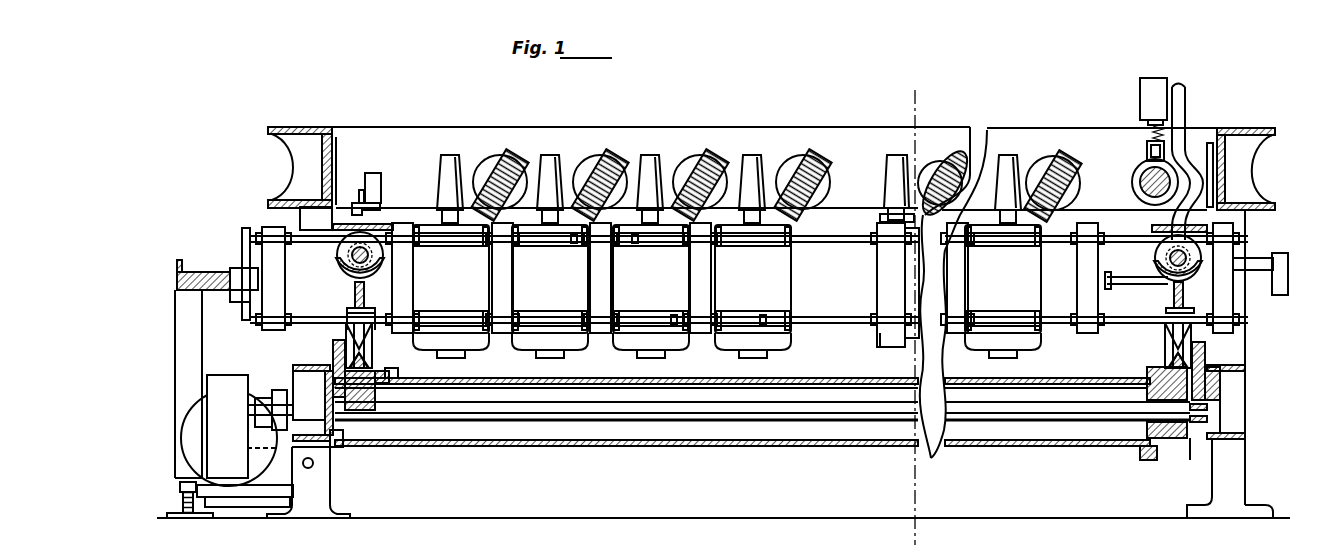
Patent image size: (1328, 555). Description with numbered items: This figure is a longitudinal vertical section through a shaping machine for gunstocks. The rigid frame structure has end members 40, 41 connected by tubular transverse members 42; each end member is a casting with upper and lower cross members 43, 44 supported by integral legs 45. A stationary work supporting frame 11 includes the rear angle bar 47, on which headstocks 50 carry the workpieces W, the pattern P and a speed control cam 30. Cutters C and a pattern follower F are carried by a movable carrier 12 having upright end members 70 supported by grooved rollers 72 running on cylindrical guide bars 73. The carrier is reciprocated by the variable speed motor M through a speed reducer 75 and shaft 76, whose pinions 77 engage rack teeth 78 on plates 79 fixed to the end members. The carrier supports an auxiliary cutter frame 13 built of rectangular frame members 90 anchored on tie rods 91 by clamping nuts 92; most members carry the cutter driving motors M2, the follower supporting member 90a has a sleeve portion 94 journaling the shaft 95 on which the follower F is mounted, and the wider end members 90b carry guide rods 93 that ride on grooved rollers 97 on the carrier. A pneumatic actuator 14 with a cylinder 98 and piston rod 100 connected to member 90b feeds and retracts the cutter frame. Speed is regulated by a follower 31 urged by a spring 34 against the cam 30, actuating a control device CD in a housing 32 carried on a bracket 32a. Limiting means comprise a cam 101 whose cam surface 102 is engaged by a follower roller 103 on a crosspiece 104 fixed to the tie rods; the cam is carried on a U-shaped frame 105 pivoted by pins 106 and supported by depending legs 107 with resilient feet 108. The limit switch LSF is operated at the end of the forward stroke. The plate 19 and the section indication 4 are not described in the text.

The stationary frame 11 is at (868, 127).
The carrier 12 is at (374, 358).
The auxiliary frame 13 is at (926, 332).
The pneumatically operated actuator 14 is at (1250, 260).
The end plate 19 is at (266, 228).
The speed control cam 30 is at (1138, 184).
The follower 31 is at (1147, 153).
The housing 32 is at (1147, 90).
The bracket 32a is at (1186, 112).
The spring 34 is at (1152, 132).
The end member 40 is at (300, 126).
The end member 41 is at (1255, 128).
The tubular transverse member 42 is at (932, 455).
The upper cross member 43 is at (288, 168).
The lower cross member 44 is at (297, 366).
The leg 45 is at (322, 495).
The rear angle bar 47 is at (582, 127).
The headstock 50 is at (490, 152).
The upright end member 70 is at (352, 298).
The grooved roller 72 is at (372, 340).
The cylindrical guide bar 73 is at (398, 370).
The speed reducer 75 is at (226, 385).
The shaft 76 is at (300, 404).
The pinion 77 is at (345, 447).
The rack teeth 78 is at (1208, 414).
The plate 79 is at (333, 356).
The rectangular frame member 90 is at (512, 272).
The follower supporting member 90a is at (890, 340).
The end frame member 90b is at (262, 233).
The tie rod 91 is at (826, 243).
The clamping nut 92 is at (576, 243).
The guide rod 93 is at (1152, 228).
The upright sleeve portion 94 is at (877, 283).
The shaft 95 is at (880, 216).
The grooved roller 97 is at (337, 258).
The cylinder 98 is at (1278, 267).
The piston rod 100 is at (1136, 283).
The cam 101 is at (200, 272).
The cam surface 102 is at (232, 296).
The follower roller 103 is at (236, 268).
The crosspiece 104 is at (246, 318).
The U-shaped frame 105 is at (178, 262).
The pin 106 is at (314, 466).
The depending leg 107 is at (177, 347).
The resilient floor engaging foot 108 is at (173, 500).
The cutter C is at (452, 156).
The workpiece W is at (512, 158).
The pattern P is at (955, 165).
The pattern follower F is at (886, 178).
The variable speed electric motor M is at (195, 408).
The cutter driving motor M2 is at (488, 348).
The control device CD is at (1170, 78).
The limit switch LSF is at (381, 185).
The section line 4 is at (902, 98).